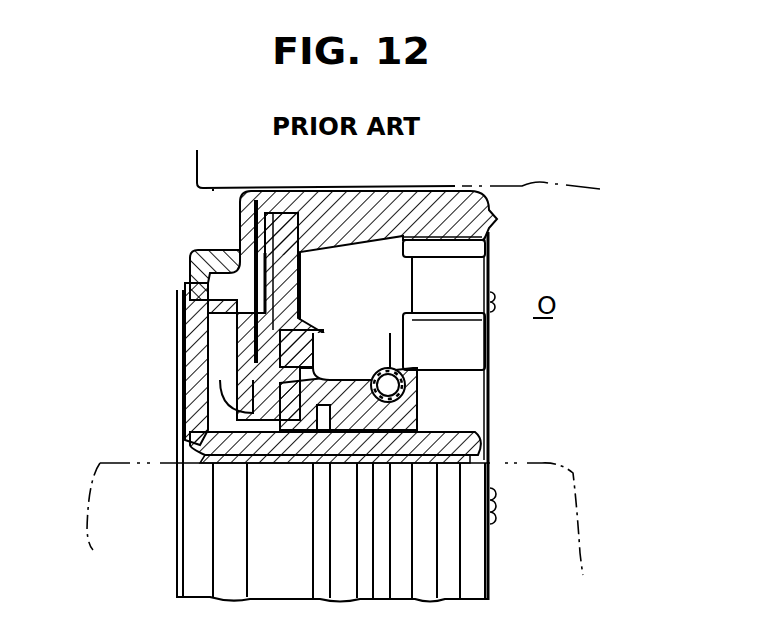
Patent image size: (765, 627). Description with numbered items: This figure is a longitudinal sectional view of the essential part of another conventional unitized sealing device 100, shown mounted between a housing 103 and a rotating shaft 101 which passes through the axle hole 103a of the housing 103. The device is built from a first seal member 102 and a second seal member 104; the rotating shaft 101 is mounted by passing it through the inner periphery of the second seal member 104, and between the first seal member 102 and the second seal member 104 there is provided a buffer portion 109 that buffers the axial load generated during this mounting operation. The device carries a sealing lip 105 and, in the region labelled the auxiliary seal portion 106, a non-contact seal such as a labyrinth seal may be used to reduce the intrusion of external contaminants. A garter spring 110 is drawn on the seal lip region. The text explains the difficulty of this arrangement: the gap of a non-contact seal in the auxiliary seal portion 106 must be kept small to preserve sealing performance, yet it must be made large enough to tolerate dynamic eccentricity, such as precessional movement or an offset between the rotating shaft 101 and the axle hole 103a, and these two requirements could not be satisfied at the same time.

The prior art seal assembly 100 is at (586, 286).
The rotating shaft 101 is at (557, 462).
The first seal member 102 is at (497, 350).
The housing wall 103 is at (423, 177).
The axle hole 103a is at (214, 191).
The second seal member 104 is at (176, 385).
The sealing lip 105 is at (426, 412).
The auxiliary seal portion 106 is at (215, 330).
The buffer portion 109 is at (205, 343).
The garter spring 110 is at (343, 392).